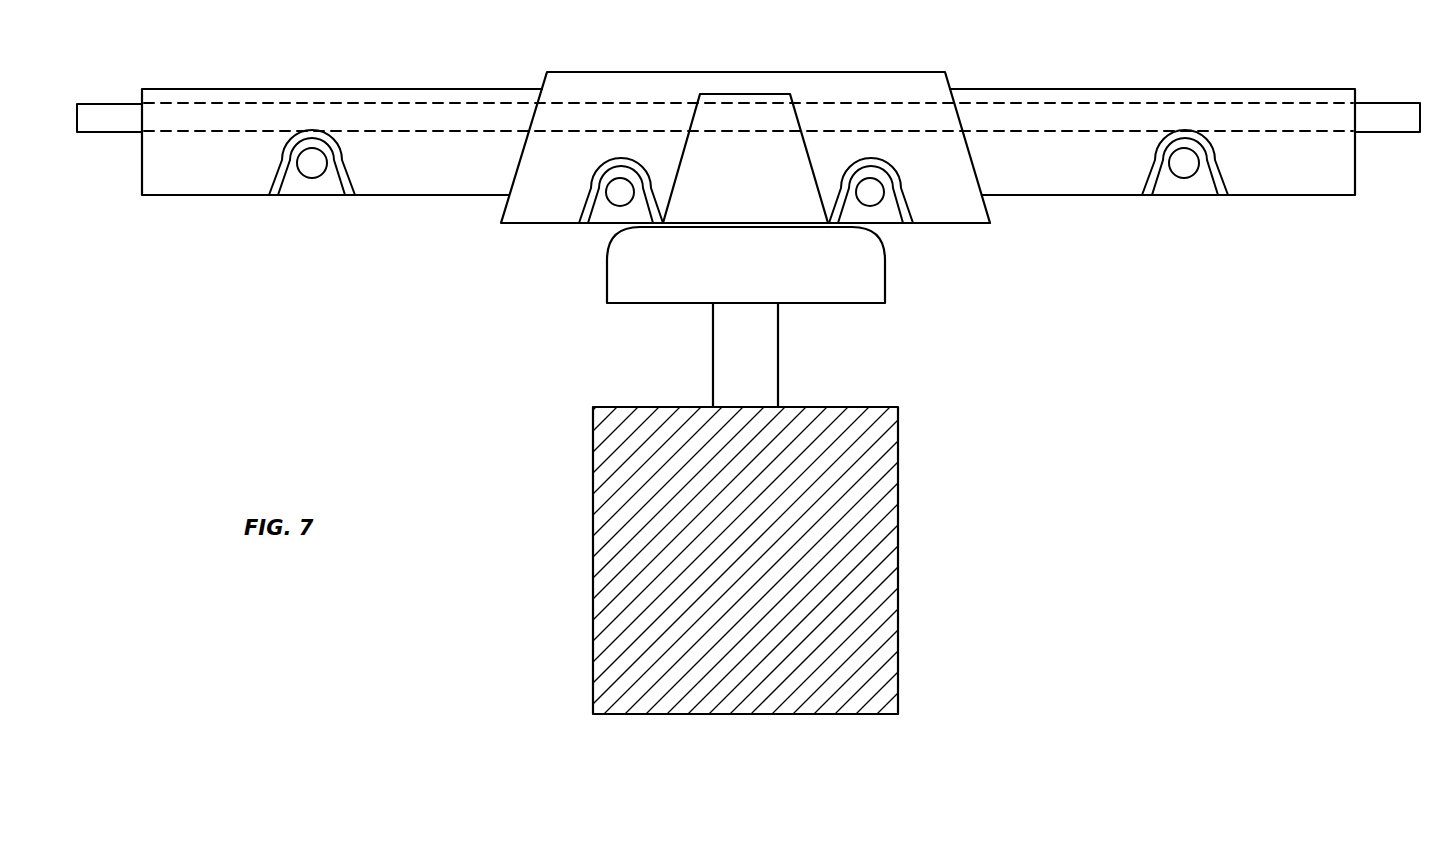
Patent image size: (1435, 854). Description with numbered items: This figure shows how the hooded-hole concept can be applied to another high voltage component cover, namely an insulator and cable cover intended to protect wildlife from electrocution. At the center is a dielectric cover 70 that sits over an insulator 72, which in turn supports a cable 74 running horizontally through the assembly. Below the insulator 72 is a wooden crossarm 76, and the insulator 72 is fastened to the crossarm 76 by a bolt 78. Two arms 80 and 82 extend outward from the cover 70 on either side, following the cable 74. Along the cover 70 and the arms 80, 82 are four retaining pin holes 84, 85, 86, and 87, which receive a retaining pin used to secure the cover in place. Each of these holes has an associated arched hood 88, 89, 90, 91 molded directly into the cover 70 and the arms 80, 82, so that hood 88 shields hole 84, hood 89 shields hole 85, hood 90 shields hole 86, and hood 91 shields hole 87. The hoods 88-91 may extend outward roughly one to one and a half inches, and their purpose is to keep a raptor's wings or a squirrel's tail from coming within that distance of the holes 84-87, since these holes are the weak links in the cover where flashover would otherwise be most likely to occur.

The dielectric cover 70 is at (823, 70).
The insulator 72 is at (646, 283).
The cable 74 is at (121, 101).
The wooden crossarm 76 is at (617, 538).
The bolt 78 is at (735, 381).
The arm 80 is at (1222, 88).
The arm 82 is at (425, 88).
The retaining pin hole 84 is at (313, 166).
The retaining pin hole 85 is at (621, 195).
The retaining pin hole 86 is at (912, 206).
The retaining pin hole 87 is at (1186, 166).
The arched hood 88 is at (270, 177).
The arched hood 89 is at (580, 206).
The arched hood 90 is at (868, 195).
The arched hood 91 is at (1145, 177).